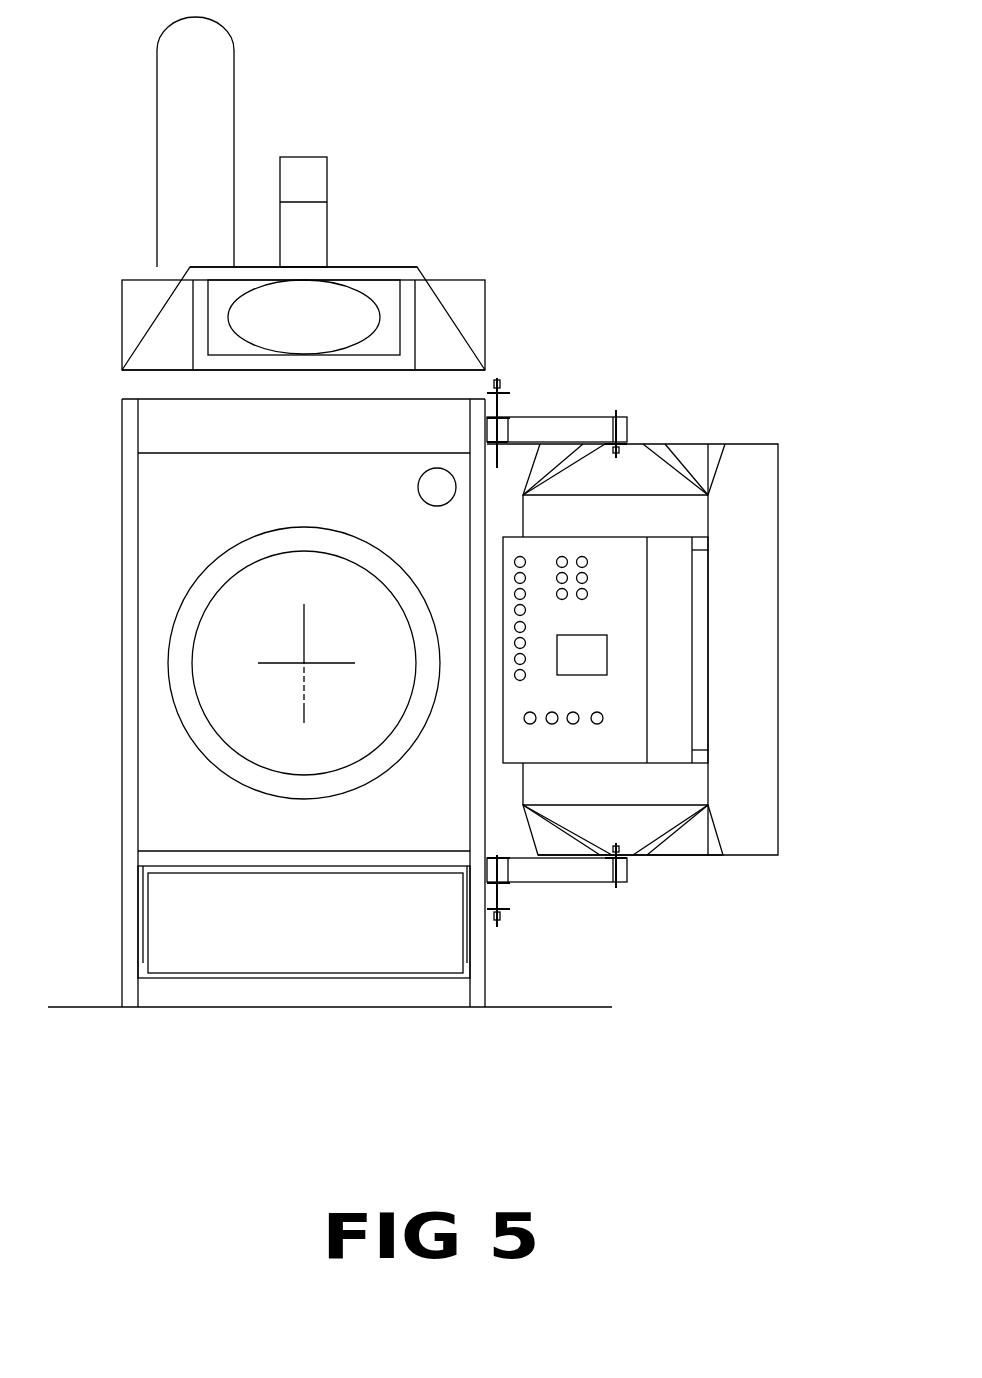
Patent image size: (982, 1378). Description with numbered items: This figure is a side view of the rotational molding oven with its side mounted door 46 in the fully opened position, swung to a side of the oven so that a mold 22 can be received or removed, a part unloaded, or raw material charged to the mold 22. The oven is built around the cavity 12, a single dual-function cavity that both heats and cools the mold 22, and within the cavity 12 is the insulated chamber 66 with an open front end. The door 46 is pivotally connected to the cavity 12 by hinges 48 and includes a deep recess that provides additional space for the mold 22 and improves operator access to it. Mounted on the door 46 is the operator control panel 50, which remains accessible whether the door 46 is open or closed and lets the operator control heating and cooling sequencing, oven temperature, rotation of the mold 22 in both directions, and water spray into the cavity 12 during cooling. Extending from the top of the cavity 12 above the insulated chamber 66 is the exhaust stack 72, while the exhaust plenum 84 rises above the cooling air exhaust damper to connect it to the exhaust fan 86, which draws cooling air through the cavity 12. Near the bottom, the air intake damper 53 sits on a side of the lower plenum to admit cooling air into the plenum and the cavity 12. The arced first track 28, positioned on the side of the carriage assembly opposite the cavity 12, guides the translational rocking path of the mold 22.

The cavity 12 is at (428, 833).
The mold 22 is at (255, 752).
The first track 28 is at (307, 170).
The door 46 is at (757, 578).
The hinges 48 is at (628, 413).
The operator control panel 50 is at (623, 733).
The air intake damper 53 is at (330, 940).
The insulated chamber 66 is at (163, 818).
The exhaust stack 72 is at (215, 168).
The exhaust plenum 84 is at (405, 275).
The exhaust fan 86 is at (337, 296).